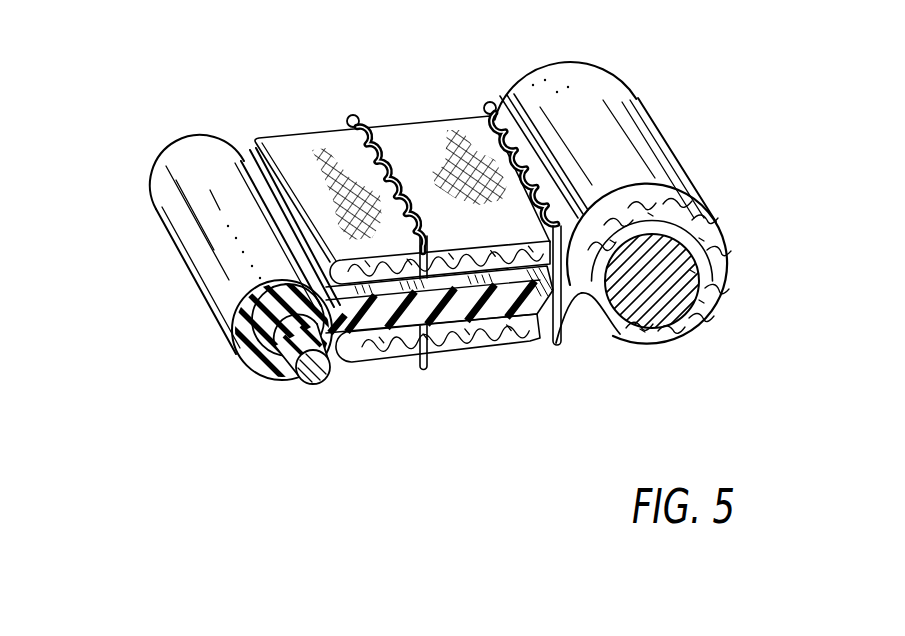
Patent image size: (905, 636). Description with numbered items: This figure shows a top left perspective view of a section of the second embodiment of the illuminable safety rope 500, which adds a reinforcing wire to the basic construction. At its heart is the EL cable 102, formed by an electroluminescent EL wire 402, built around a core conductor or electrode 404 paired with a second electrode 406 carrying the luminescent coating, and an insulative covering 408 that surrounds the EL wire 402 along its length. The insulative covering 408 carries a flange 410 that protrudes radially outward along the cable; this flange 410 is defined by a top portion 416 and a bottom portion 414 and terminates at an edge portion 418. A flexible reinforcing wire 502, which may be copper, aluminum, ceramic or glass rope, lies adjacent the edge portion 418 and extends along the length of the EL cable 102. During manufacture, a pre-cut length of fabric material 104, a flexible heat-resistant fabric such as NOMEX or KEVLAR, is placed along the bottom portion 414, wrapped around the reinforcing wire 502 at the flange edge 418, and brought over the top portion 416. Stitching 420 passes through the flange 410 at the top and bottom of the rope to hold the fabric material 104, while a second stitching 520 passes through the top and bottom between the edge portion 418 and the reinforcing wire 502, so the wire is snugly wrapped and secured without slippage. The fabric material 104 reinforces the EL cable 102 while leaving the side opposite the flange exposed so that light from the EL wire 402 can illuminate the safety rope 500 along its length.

The EL cable 102 is at (157, 305).
The fabric material 104 is at (637, 120).
The electroluminescent (EL) wire 402 is at (332, 455).
The core conductor or electrode 404 is at (327, 380).
The shaft end 406 is at (261, 372).
The insulative covering 408 is at (172, 200).
The flange 410 is at (512, 328).
The bottom portion 414 is at (462, 345).
The top portion 416 is at (387, 342).
The edge portion 418 is at (530, 325).
The stitching 420 is at (350, 115).
The safety rope 500 is at (755, 396).
The flexible reinforcing wire 502 is at (700, 262).
The second stitching 520 is at (487, 103).